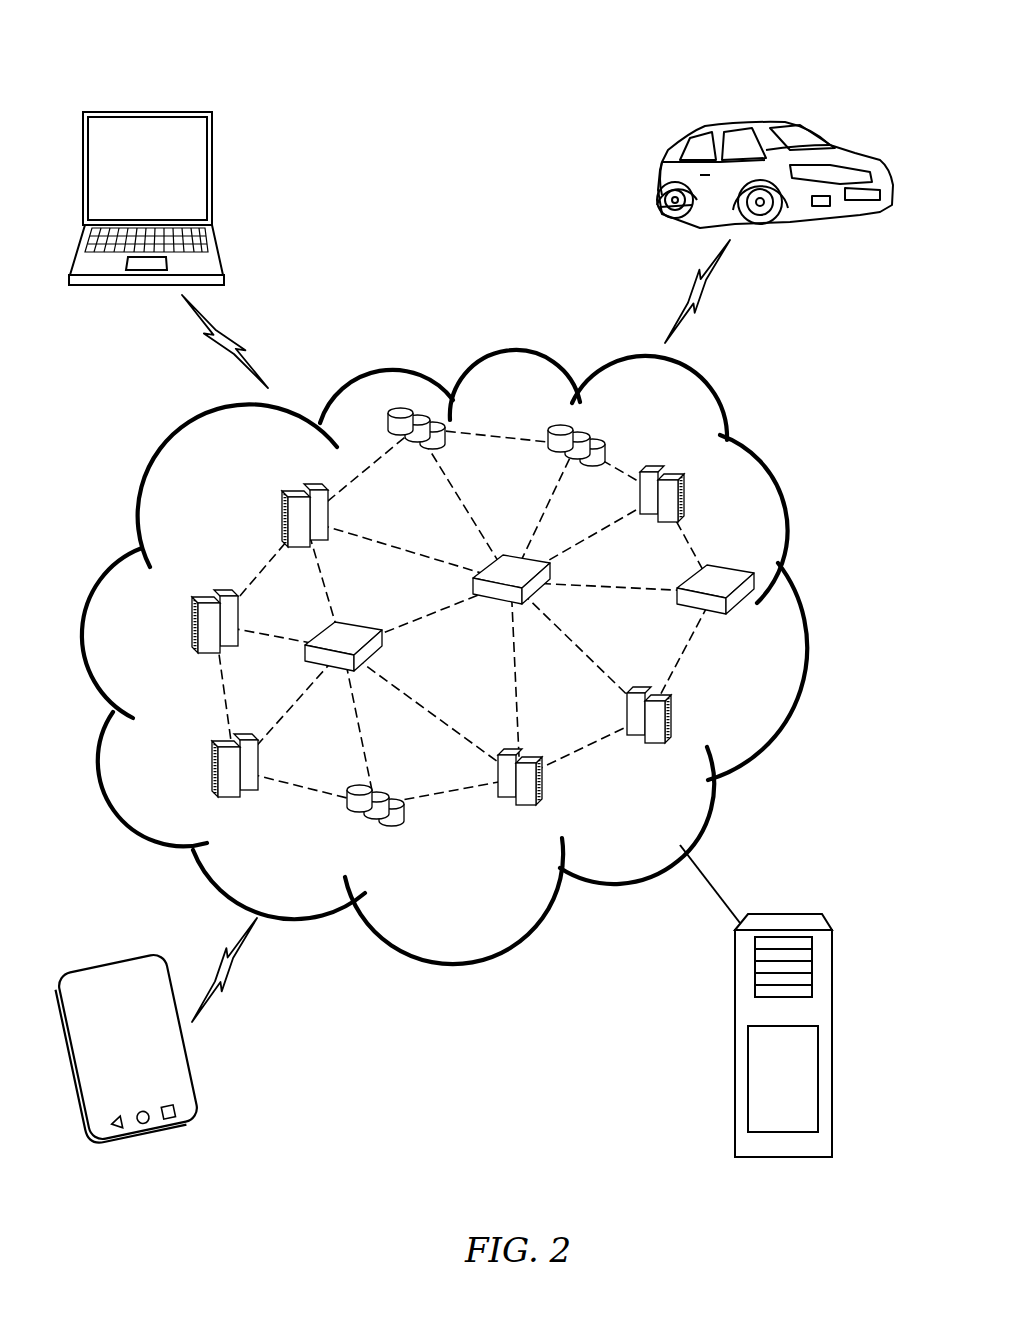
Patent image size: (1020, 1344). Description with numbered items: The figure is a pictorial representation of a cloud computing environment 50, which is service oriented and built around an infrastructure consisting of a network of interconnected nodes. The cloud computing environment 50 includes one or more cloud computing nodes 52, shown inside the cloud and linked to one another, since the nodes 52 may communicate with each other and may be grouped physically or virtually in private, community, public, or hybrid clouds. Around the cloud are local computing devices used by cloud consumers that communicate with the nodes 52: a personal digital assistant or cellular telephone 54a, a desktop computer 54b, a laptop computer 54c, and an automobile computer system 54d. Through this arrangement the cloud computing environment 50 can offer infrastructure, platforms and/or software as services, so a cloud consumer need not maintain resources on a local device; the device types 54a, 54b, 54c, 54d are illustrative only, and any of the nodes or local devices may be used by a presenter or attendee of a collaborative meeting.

The cloud computing environment 50 is at (355, 63).
The cloud computing nodes 52 is at (203, 646).
The personal digital assistant or cellular telephone 54a is at (165, 1137).
The desktop computer 54b is at (733, 1130).
The laptop computer 54c is at (138, 110).
The automobile computer system 54d is at (748, 118).